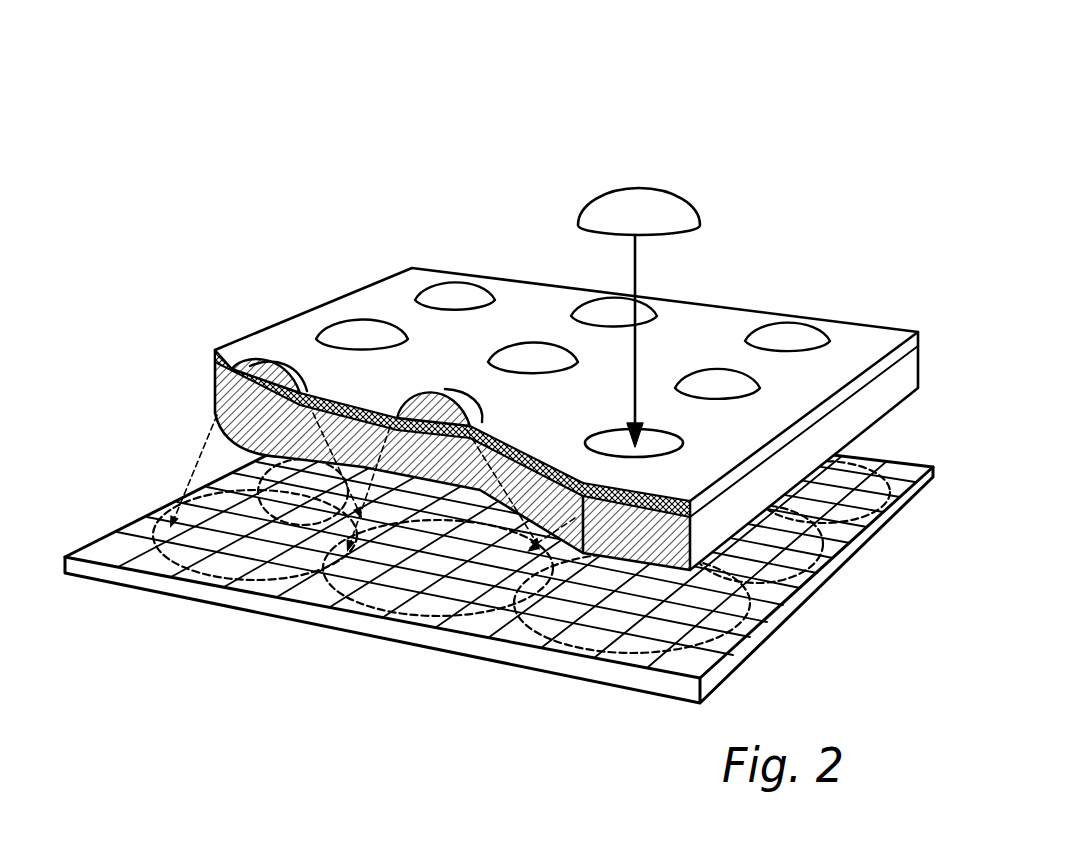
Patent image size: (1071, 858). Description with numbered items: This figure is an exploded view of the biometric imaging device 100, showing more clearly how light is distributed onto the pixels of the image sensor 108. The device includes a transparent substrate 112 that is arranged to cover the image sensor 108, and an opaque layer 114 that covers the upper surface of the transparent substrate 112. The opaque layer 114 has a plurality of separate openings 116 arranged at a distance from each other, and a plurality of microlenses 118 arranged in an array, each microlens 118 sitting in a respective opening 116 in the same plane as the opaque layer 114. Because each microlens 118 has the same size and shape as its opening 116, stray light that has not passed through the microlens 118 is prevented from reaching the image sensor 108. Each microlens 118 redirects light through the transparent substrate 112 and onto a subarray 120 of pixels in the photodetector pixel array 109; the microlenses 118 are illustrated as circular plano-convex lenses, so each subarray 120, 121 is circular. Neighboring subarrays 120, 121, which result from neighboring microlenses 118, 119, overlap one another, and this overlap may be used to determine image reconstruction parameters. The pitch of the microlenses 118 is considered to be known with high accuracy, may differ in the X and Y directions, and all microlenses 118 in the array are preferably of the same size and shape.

The biometric imaging device 100 is at (378, 108).
The image sensor 108 is at (172, 588).
The photodetector pixel array 109 is at (507, 628).
The transparent substrate 112 is at (215, 393).
The opaque layer 114 is at (228, 348).
The opening 116 is at (655, 443).
The microlens 118 is at (637, 207).
The microlens 119 is at (270, 365).
The subarray 120 is at (360, 607).
The subarray 121 is at (290, 580).